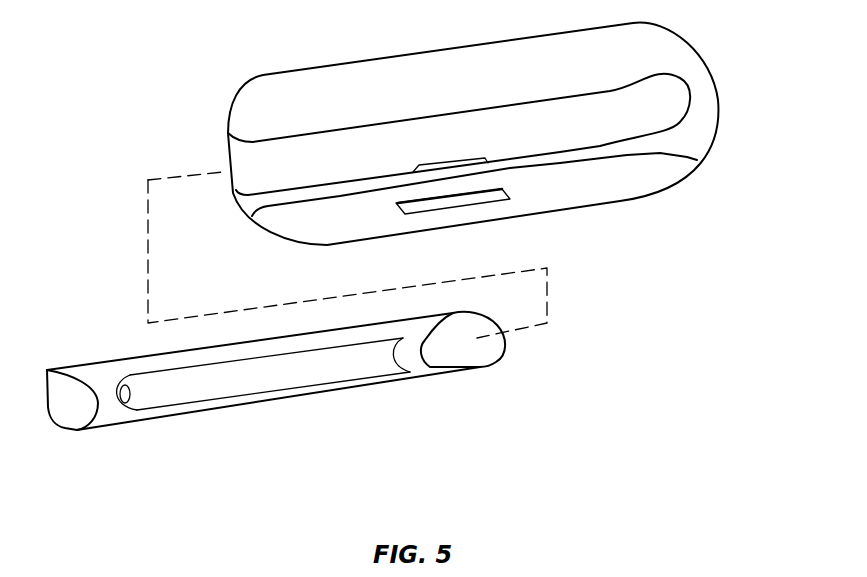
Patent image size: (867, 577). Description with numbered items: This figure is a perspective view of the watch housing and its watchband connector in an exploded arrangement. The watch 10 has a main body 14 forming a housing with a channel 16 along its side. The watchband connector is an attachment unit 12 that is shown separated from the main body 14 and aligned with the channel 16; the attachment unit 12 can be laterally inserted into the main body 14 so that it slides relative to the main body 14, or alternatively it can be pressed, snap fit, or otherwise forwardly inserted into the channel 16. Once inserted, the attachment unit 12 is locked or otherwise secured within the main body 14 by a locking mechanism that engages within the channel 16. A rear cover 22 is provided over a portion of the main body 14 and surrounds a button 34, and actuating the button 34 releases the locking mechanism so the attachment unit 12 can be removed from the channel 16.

The watch 10 is at (636, 322).
The attachment unit 12 is at (165, 422).
The main body 14 is at (703, 100).
The channel 16 is at (667, 88).
The rear cover 22 is at (623, 188).
The button 34 is at (460, 210).